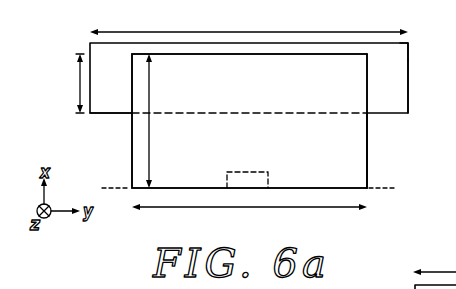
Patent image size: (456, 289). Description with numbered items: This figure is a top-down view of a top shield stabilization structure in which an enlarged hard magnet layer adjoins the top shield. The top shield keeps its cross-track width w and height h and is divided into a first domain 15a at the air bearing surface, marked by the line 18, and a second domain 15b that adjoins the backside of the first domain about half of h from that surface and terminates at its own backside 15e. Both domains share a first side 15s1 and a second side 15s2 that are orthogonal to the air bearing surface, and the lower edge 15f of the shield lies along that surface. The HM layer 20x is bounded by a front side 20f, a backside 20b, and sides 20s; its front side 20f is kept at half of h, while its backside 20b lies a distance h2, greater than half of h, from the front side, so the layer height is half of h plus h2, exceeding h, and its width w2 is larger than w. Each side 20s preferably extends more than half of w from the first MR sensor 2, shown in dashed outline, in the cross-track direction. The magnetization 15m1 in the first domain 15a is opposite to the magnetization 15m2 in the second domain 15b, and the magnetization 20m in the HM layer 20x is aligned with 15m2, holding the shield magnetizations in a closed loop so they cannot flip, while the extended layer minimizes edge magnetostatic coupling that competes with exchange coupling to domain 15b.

The first MR sensor 2 is at (258, 177).
The first domain 15a is at (355, 140).
The second domain 15b is at (346, 70).
The backside 15e is at (306, 54).
The lower face of movable body 15f is at (367, 188).
The magnetization 15m1 is at (292, 155).
The magnetization 15m2 is at (295, 78).
The first side 15s1 is at (367, 156).
The second side 15s2 is at (131, 158).
The ABS 18 is at (249, 187).
The backside 20b is at (201, 43).
The front side 20f is at (117, 113).
The magnetization 20m is at (127, 87).
The sides 20s is at (408, 86).
The HM layer 20x is at (399, 58).
The cross-track width w is at (249, 200).
The width w2 is at (249, 25).
The height h is at (154, 121).
The distance h2 is at (71, 83).